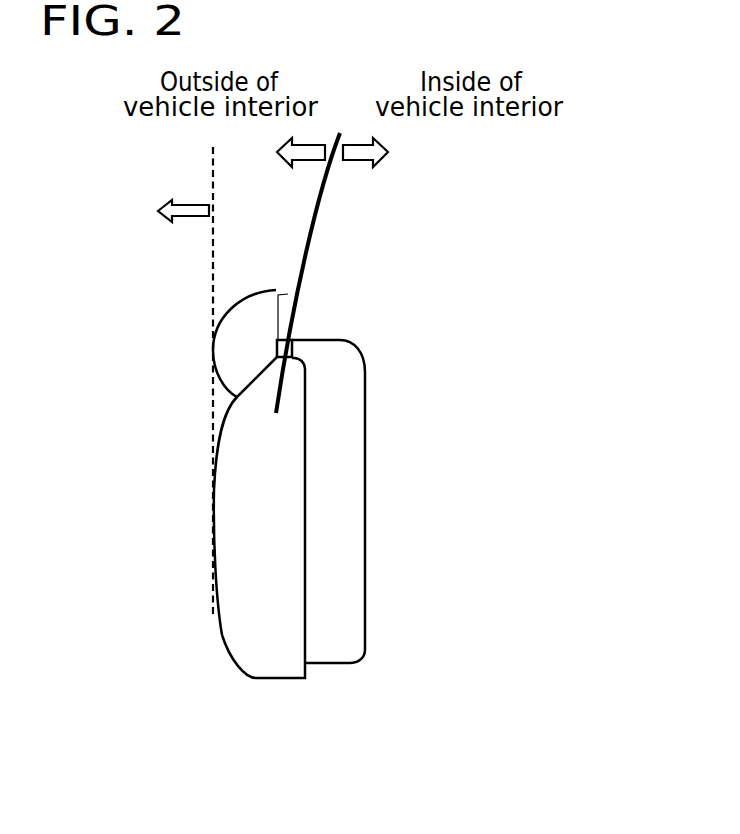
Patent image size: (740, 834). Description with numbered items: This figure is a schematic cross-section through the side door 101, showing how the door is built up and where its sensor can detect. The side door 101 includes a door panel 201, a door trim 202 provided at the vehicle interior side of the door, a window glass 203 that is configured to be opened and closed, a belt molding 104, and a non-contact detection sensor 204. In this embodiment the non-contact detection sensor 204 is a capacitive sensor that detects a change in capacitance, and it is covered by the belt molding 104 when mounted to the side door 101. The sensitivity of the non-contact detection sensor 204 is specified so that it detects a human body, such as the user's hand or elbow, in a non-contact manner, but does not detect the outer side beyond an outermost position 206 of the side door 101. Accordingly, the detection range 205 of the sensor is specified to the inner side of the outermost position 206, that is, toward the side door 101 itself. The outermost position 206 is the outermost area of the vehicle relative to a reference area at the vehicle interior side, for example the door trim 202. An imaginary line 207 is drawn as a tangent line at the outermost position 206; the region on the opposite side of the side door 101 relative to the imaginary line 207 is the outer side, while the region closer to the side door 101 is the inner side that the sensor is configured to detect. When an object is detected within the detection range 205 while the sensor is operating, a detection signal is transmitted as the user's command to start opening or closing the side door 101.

The side door 101 is at (437, 174).
The belt molding 104 is at (285, 288).
The door panel 201 is at (271, 678).
The door trim 202 is at (365, 540).
The window glass 203 is at (310, 238).
The non-contact detection sensor 204 is at (290, 340).
The detection range 205 is at (225, 312).
The outermost position 206 is at (212, 522).
The imaginary line 207 is at (213, 190).